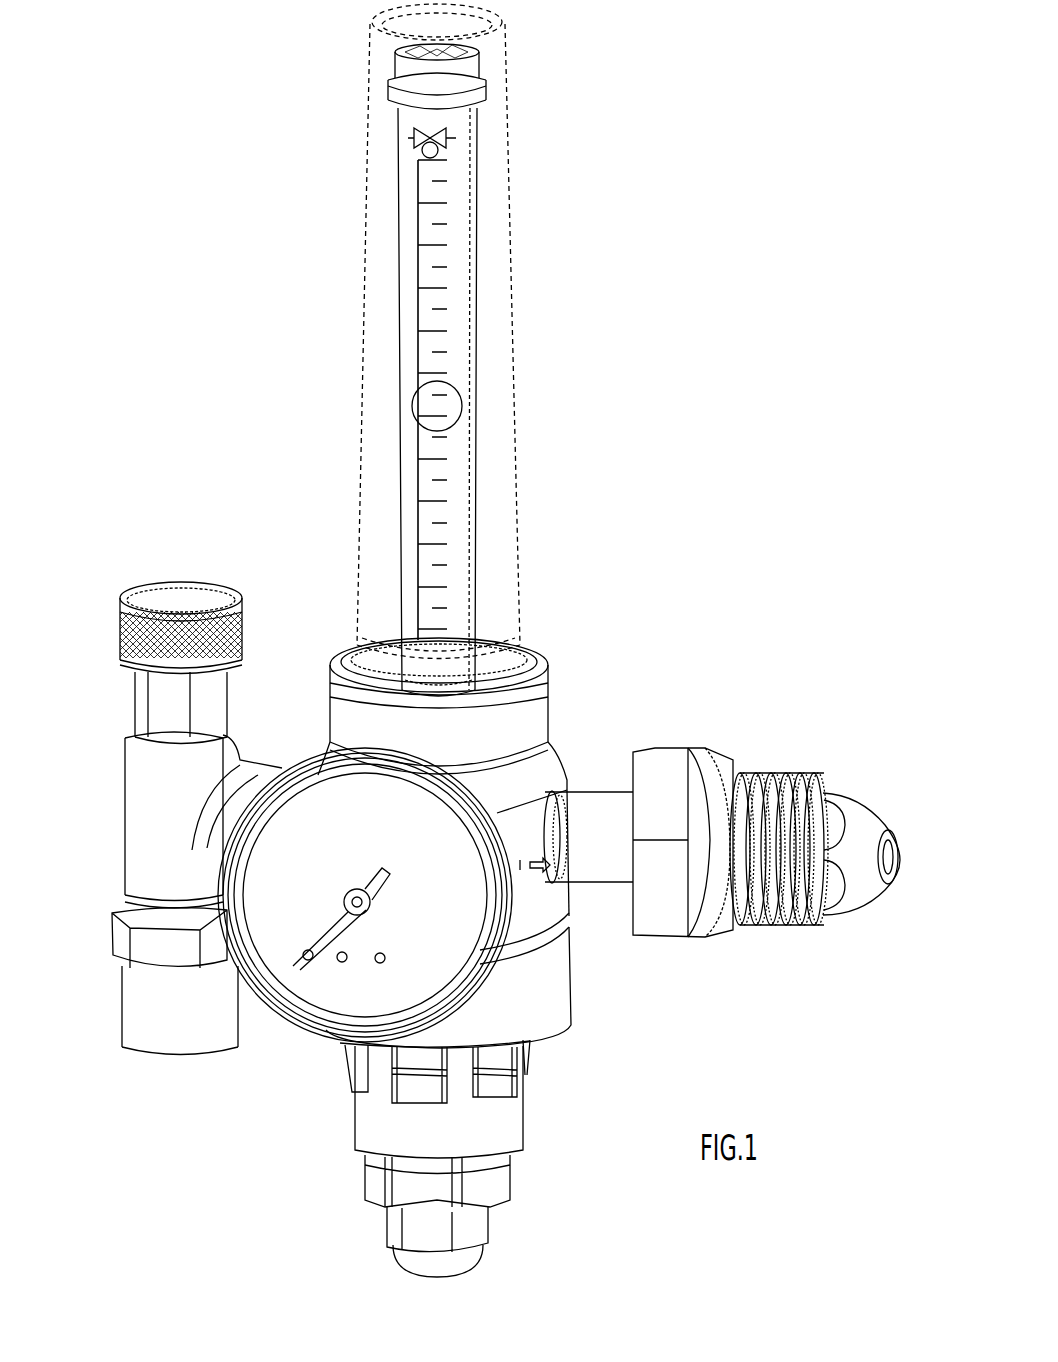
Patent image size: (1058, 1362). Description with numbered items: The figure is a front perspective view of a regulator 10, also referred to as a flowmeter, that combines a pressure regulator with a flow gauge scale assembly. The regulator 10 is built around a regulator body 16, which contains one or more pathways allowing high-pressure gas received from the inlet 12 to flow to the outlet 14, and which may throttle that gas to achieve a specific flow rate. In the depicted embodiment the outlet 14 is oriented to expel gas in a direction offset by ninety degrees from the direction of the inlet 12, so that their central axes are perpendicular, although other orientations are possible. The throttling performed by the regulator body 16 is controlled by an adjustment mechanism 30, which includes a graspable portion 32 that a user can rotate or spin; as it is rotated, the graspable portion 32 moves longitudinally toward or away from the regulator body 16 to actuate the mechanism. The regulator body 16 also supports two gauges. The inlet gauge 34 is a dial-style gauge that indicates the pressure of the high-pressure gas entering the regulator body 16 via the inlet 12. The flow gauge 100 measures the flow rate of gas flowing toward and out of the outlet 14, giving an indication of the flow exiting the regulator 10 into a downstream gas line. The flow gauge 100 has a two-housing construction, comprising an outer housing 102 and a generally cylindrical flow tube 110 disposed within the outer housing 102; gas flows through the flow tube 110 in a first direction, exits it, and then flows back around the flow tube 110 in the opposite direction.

The regulator 10 is at (656, 389).
The flow gauge 100 is at (584, 315).
The outer housing 102 is at (514, 160).
The generally cylindrical flow tube 110 is at (397, 391).
The inlet 12 is at (806, 759).
The outlet 14 is at (96, 713).
The regulator body 16 is at (548, 733).
The adjustment mechanism 30 is at (536, 1070).
The graspable portion 32 is at (506, 1207).
The inlet gauge 34 is at (299, 1056).